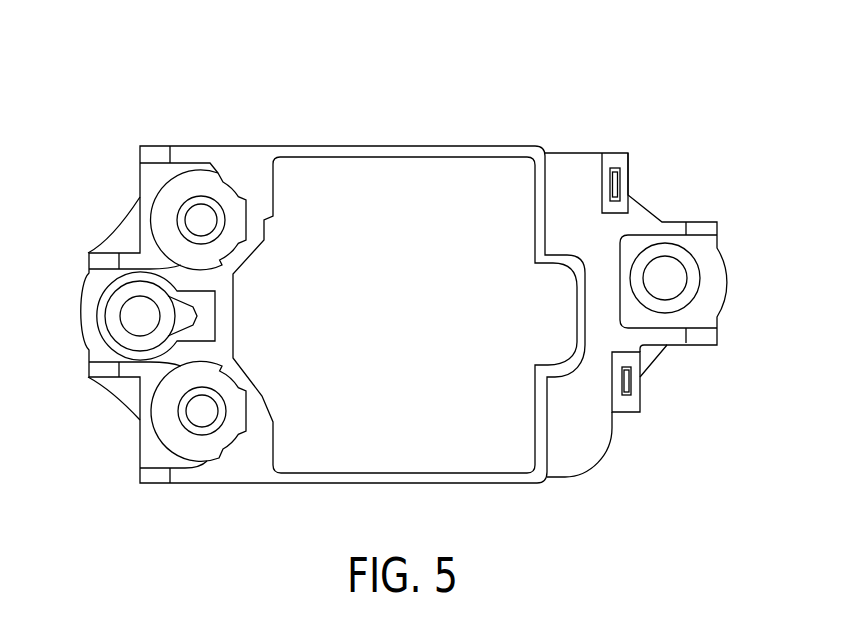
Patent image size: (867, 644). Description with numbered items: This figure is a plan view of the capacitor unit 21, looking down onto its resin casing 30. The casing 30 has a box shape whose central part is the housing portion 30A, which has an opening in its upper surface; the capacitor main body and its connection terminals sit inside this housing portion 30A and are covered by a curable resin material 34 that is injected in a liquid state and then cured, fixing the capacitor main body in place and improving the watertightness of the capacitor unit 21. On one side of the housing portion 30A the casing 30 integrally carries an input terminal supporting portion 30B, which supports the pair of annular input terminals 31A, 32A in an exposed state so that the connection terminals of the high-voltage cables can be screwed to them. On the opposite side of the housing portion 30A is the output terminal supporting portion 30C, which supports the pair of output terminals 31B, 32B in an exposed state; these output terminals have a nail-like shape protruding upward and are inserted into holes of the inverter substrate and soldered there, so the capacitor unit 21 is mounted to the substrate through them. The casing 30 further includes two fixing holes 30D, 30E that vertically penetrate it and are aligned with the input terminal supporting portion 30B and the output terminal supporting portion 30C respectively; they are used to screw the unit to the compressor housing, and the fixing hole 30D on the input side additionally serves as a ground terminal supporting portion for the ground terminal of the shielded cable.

The capacitor unit 21 is at (439, 84).
The casing 30 is at (256, 160).
The housing portion 30A is at (380, 163).
The input terminal supporting portion 30B is at (131, 240).
The output terminal supporting portion 30C is at (639, 423).
The fixing hole 30D is at (126, 318).
The fixing hole 30E is at (672, 279).
The input terminal 31A is at (165, 420).
The output terminal 31B is at (625, 380).
The input terminal 32A is at (165, 205).
The output terminal 32B is at (617, 185).
The resin material 34 is at (466, 182).